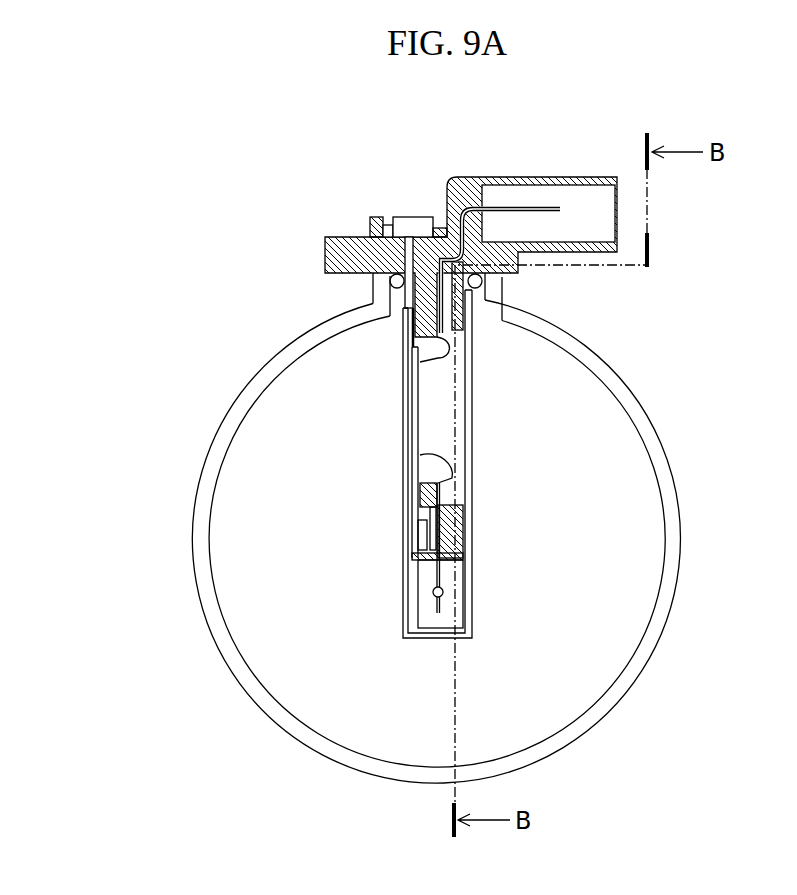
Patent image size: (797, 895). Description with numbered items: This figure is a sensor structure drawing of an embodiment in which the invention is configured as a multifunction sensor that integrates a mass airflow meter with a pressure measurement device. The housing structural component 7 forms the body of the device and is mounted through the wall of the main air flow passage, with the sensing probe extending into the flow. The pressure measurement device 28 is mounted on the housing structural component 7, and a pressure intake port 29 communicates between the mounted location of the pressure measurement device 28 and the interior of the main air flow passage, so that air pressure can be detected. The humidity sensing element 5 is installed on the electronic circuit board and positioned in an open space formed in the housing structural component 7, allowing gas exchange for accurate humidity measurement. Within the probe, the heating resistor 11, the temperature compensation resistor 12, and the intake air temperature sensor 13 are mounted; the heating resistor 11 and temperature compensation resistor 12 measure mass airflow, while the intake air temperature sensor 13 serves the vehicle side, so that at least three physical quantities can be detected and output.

The housing structural component 7 is at (332, 257).
The pressure measurement device 28 is at (412, 224).
The pressure intake port 29 is at (413, 288).
The humidity sensing element 5 is at (423, 531).
The heating resistor 11 is at (432, 592).
The temperature compensation resistor 12 is at (438, 592).
The intake air temperature sensor 13 is at (427, 528).